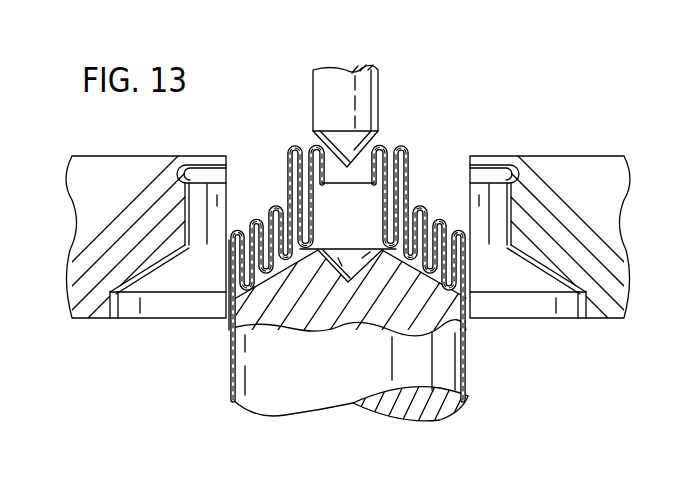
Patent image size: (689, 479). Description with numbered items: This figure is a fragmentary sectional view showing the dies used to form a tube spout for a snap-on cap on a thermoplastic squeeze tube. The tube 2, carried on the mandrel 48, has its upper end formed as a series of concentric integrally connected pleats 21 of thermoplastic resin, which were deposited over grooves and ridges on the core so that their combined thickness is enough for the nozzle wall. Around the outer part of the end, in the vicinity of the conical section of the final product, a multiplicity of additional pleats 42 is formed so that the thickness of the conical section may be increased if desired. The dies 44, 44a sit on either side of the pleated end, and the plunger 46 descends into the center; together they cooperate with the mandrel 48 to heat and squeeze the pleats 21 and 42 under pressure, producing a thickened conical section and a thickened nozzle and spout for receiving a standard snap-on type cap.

The tube 2 is at (470, 323).
The pleats 21 is at (411, 157).
The pleats 42 is at (220, 270).
The die 44 is at (150, 170).
The die 44a is at (558, 162).
The plunger 46 is at (372, 104).
The mandrel 48 is at (450, 366).